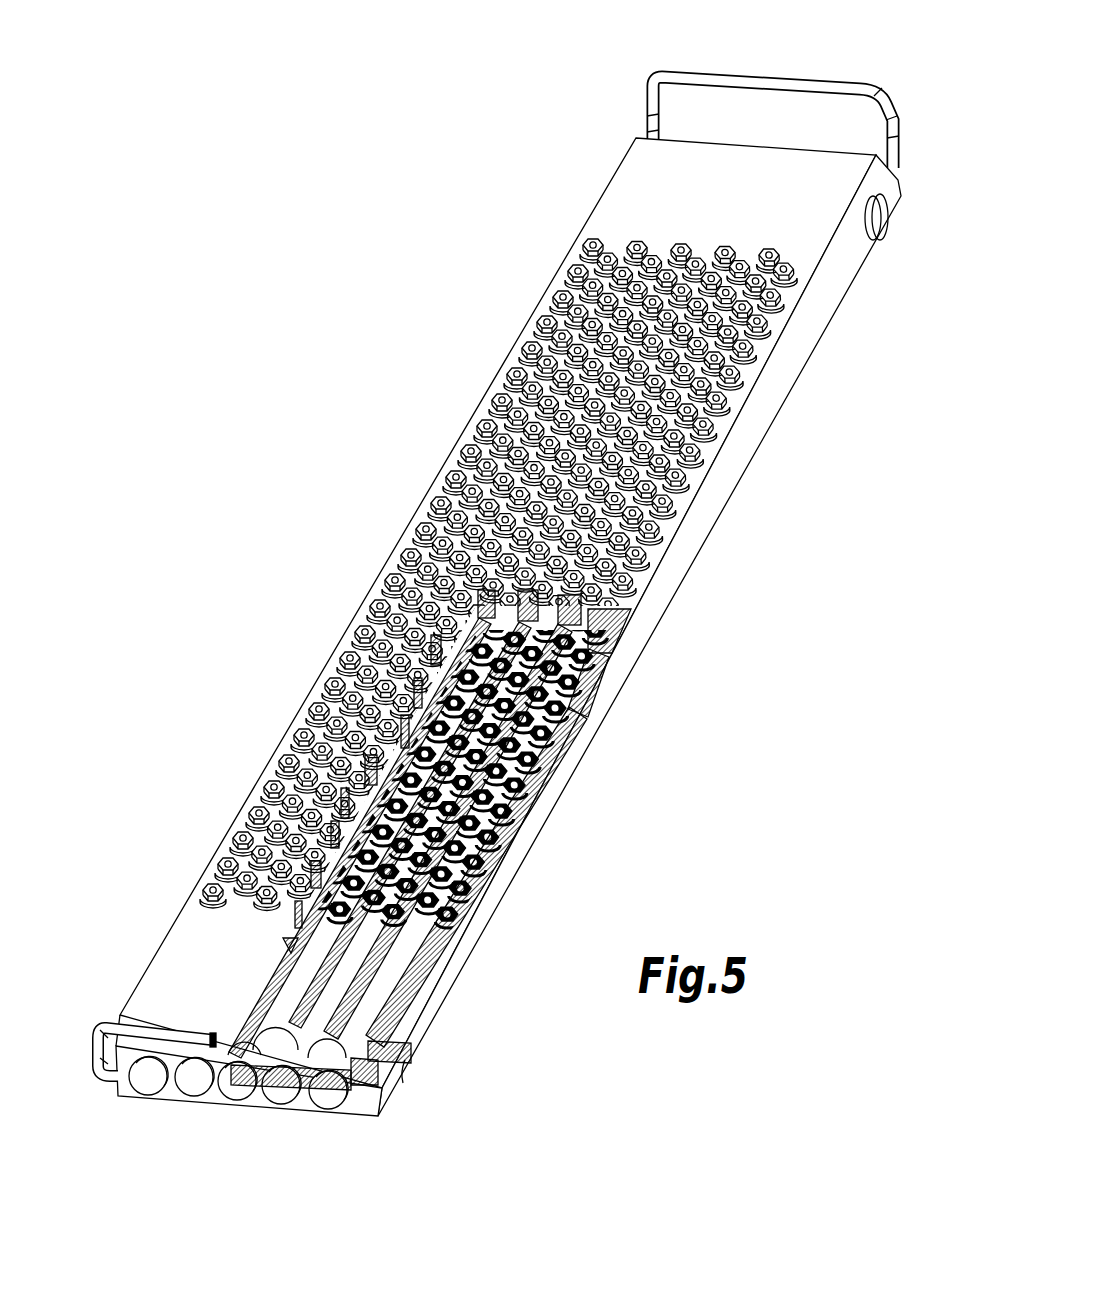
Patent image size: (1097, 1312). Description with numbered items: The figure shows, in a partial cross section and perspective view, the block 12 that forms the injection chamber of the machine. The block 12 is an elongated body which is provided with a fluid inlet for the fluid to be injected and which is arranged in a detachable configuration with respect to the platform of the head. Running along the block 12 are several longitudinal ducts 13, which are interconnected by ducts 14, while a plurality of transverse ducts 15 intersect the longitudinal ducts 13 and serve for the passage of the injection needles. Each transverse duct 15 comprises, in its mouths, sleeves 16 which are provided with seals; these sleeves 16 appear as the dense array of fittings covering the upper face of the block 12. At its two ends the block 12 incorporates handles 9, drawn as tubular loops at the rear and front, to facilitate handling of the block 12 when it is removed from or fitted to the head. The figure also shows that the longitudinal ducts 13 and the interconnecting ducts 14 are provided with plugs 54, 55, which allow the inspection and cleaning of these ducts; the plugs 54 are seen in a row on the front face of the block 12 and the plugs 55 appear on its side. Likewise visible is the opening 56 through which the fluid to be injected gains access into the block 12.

The handle 9 is at (750, 75).
The block 12 is at (657, 587).
The longitudinal duct 13 is at (360, 1003).
The interconnecting duct 14 is at (346, 1085).
The transverse duct 15 is at (503, 817).
The sleeve 16 is at (262, 746).
The plug 54 is at (188, 1086).
The plug 55 is at (868, 233).
The opening 56 is at (246, 1060).